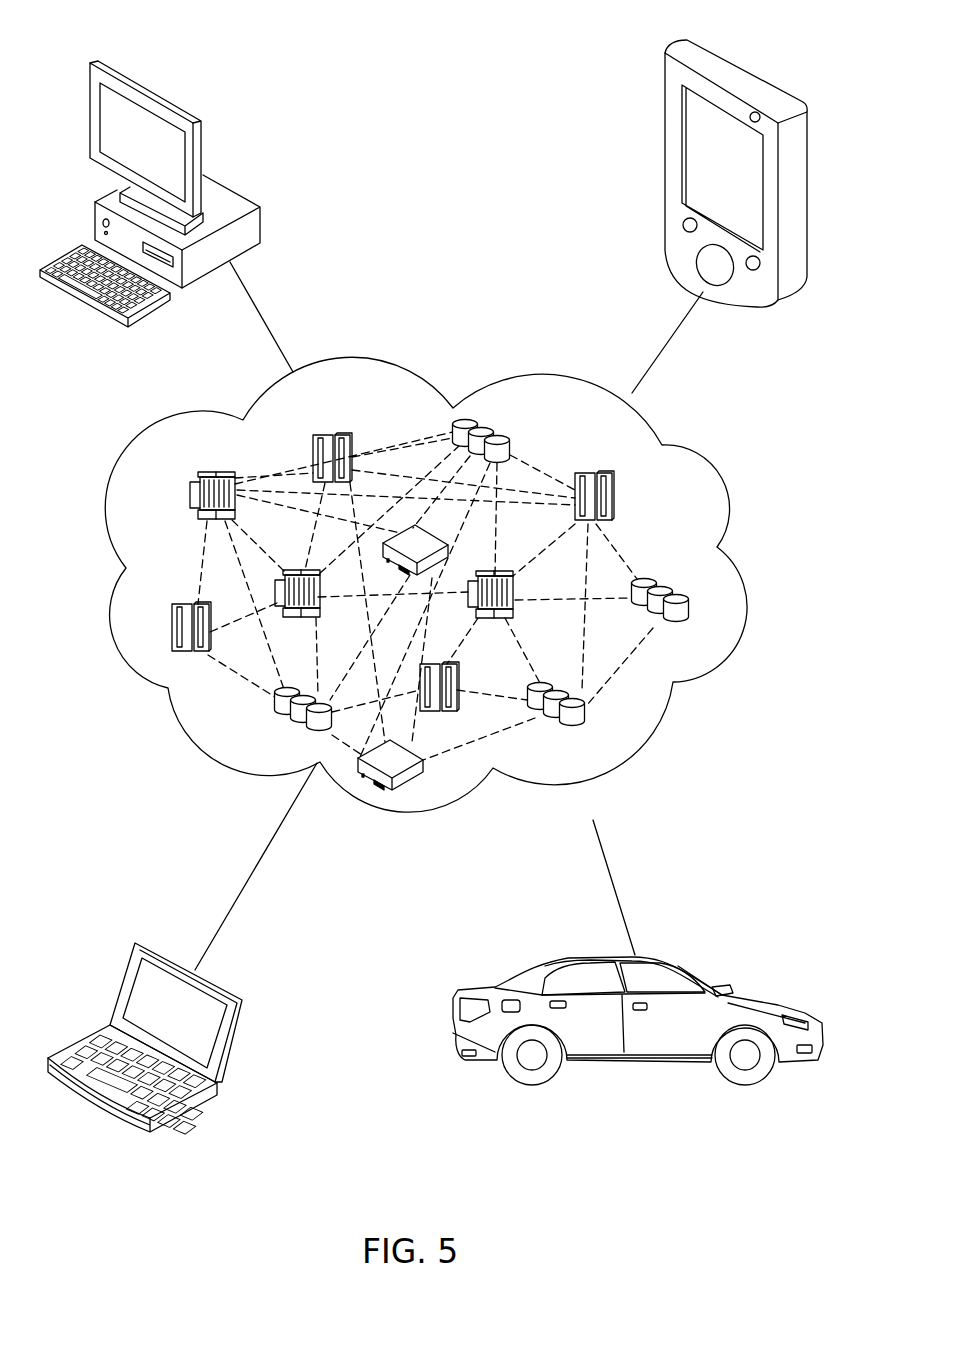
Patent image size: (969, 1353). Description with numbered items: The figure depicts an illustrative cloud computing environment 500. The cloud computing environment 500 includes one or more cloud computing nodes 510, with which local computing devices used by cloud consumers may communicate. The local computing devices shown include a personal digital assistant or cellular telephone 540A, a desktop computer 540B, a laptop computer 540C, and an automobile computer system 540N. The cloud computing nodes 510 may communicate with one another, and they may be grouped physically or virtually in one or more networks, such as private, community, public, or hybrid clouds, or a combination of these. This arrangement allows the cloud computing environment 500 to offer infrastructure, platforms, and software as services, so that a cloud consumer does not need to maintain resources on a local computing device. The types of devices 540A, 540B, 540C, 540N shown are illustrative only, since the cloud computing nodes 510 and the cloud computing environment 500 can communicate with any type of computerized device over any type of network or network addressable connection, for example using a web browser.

The cloud computing environment 500 is at (720, 665).
The cloud computing nodes 510 is at (662, 522).
The personal digital assistant (PDA) or cellular telephone 540A is at (663, 117).
The desktop computer 540B is at (263, 222).
The laptop computer 540C is at (245, 1012).
The automobile computer system 540N is at (822, 1023).